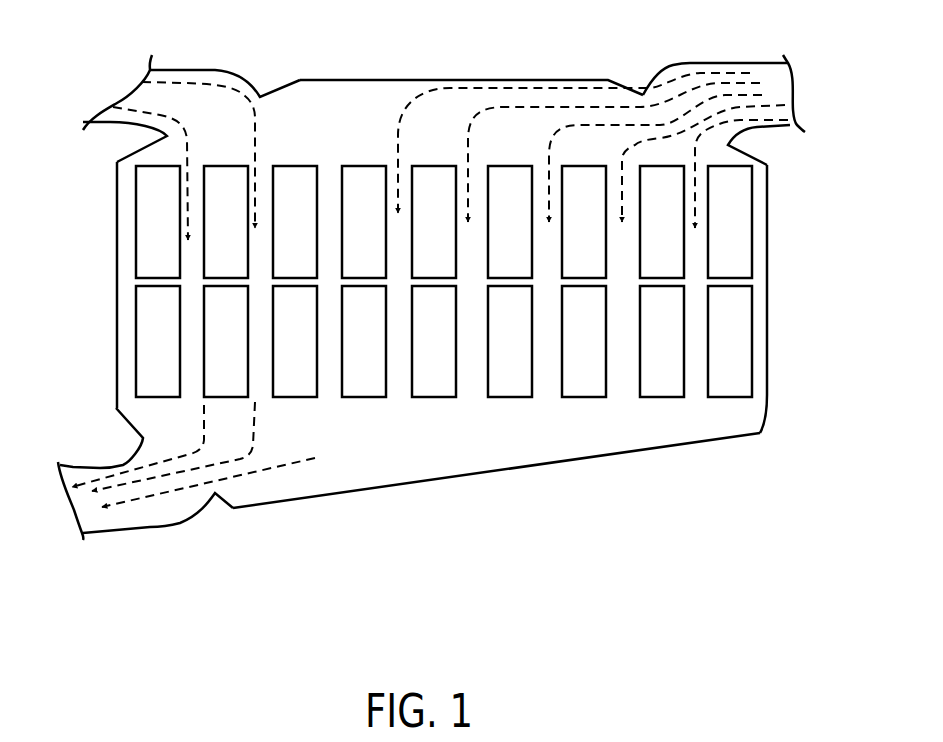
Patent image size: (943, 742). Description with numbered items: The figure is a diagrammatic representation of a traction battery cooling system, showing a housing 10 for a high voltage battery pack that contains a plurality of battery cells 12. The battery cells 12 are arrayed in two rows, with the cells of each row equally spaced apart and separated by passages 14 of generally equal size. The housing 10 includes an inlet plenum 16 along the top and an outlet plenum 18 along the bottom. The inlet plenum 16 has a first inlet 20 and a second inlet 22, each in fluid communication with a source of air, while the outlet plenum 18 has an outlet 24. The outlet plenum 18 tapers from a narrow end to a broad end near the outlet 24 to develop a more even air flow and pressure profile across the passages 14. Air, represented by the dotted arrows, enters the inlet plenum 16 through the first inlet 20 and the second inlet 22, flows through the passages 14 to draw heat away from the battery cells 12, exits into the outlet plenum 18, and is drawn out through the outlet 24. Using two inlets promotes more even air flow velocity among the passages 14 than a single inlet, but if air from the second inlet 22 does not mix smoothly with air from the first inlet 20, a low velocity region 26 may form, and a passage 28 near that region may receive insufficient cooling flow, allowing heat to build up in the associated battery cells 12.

The housing 10 is at (97, 211).
The battery cells 12 is at (133, 250).
The passages 14 is at (402, 376).
The inlet plenum 16 is at (402, 80).
The outlet plenum 18 is at (523, 468).
The first inlet 20 is at (653, 73).
The second inlet 22 is at (205, 68).
The outlet 24 is at (153, 528).
The low air velocity region 26 is at (342, 92).
The passage proximate low air velocity region 28 is at (325, 386).